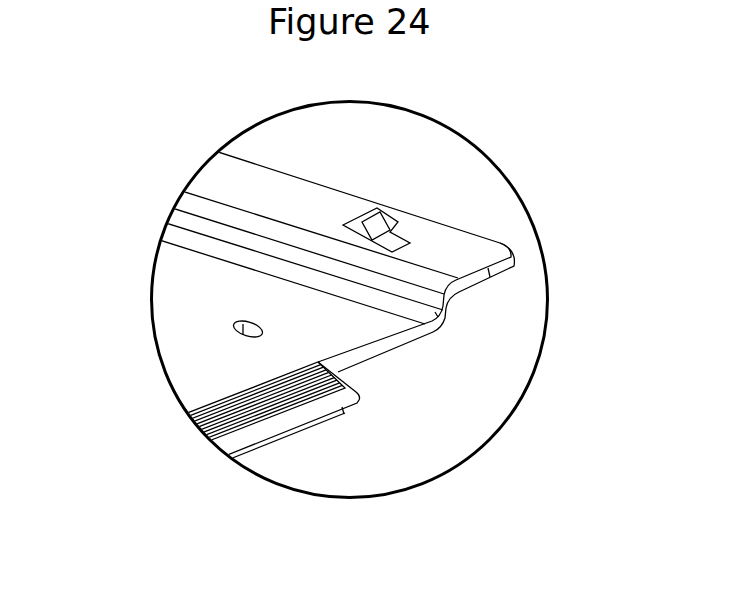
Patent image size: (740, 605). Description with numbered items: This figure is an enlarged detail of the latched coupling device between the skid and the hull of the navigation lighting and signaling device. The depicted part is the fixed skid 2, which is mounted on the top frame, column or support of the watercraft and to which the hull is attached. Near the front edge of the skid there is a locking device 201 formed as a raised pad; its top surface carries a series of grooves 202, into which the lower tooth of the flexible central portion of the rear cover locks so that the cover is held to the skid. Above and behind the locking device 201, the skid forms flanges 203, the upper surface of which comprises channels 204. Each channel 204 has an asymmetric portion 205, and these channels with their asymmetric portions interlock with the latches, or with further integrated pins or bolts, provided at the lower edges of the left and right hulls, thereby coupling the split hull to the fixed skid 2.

The fixed skid 2 is at (188, 372).
The locking device 201 is at (325, 417).
The grooves 202 is at (230, 410).
The flanges 203 is at (228, 178).
The channels 204 is at (375, 220).
The asymmetric portion 205 is at (400, 240).